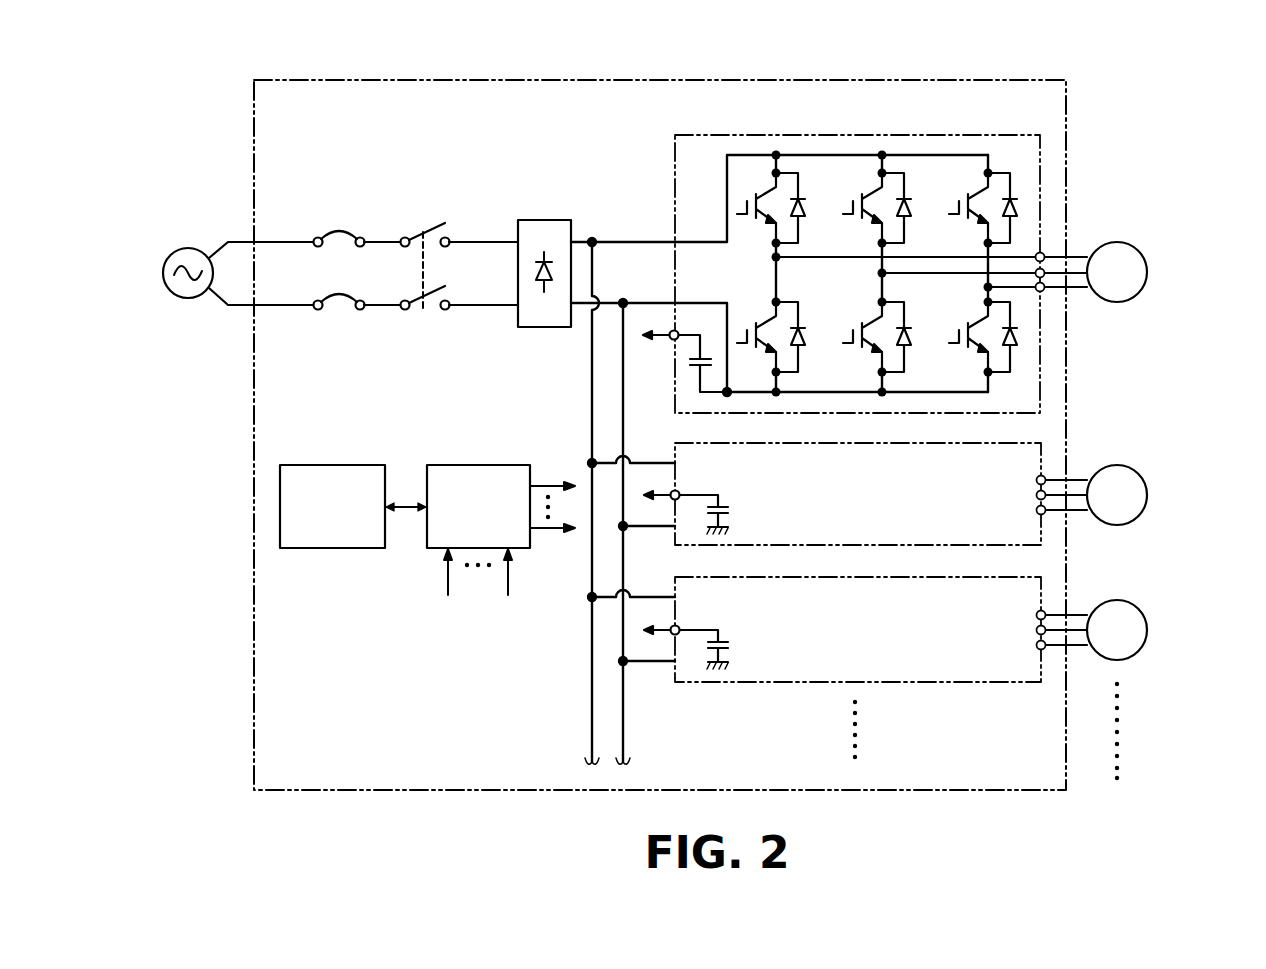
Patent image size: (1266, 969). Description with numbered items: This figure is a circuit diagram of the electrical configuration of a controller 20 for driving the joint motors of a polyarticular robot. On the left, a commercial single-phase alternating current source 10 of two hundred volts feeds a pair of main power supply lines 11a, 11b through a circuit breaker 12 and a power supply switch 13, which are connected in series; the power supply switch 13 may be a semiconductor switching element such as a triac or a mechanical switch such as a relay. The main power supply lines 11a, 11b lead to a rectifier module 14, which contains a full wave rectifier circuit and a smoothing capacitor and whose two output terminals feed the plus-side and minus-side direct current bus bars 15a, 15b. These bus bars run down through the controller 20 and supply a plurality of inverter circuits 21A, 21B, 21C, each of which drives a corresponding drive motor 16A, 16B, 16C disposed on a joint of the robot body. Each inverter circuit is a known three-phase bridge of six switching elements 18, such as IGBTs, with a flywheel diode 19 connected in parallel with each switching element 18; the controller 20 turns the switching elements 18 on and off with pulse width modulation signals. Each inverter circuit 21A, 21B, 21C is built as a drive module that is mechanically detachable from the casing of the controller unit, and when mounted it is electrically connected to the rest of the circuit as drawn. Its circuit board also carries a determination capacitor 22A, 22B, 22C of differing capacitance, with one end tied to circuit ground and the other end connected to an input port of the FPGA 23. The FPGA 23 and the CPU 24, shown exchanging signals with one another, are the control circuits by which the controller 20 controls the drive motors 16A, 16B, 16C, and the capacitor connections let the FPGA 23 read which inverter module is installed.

The commercial single-phase alternating current source 10 is at (186, 248).
The main power supply line 11a is at (478, 240).
The main power supply line 11b is at (478, 307).
The circuit breaker 12 is at (339, 229).
The power supply switch 13 is at (417, 232).
The rectifier module 14 is at (547, 218).
The direct current bus bar 15a is at (647, 240).
The direct current bus bar 15b is at (647, 301).
The drive motor 16A is at (1148, 272).
The drive motor 16B is at (1148, 495).
The drive motor 16C is at (1148, 630).
The switching element 18 is at (763, 227).
The flywheel diode 19 is at (803, 208).
The controller 20 is at (493, 78).
The inverter circuit 21A is at (903, 274).
The inverter circuit 21B is at (1042, 452).
The inverter circuit 21C is at (1042, 586).
The determination capacitor 22A is at (686, 357).
The determination capacitor 22B is at (729, 508).
The determination capacitor 22C is at (729, 643).
The FPGA 23 is at (478, 464).
The CPU 24 is at (332, 464).